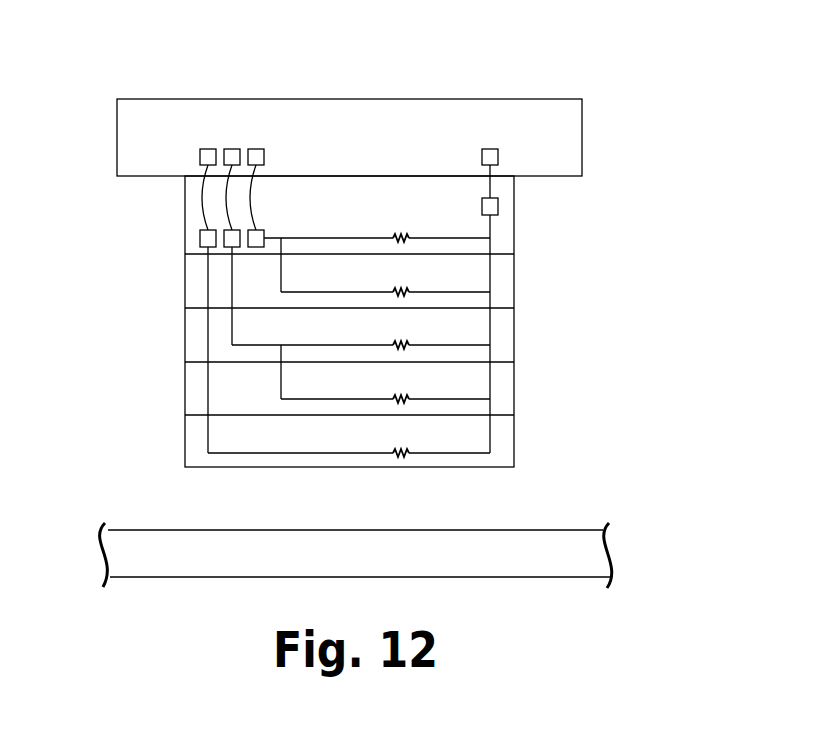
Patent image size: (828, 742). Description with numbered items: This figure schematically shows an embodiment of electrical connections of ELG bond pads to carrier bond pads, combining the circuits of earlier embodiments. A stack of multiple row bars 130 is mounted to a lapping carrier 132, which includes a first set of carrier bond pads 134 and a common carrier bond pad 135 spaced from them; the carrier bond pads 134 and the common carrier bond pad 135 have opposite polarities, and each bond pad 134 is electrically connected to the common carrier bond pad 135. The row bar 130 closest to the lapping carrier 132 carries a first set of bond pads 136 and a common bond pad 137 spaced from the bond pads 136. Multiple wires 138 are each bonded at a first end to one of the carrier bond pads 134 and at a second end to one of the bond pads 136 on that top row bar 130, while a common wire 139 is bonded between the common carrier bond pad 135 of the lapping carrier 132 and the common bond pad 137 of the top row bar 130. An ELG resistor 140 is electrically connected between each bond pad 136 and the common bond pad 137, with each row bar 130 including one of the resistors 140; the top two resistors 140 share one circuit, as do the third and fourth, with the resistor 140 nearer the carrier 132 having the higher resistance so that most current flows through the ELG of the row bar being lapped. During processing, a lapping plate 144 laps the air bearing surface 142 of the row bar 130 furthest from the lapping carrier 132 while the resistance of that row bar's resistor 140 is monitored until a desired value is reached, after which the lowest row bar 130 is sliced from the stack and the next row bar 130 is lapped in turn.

The row bar 130 is at (193, 213).
The lapping carrier 132 is at (563, 138).
The carrier bond pads 134 is at (211, 150).
The common carrier bond pad 135 is at (492, 149).
The bond pads 136 is at (200, 238).
The common bond pad 137 is at (498, 205).
The wires 138 is at (195, 195).
The common wire 139 is at (498, 174).
The ELG resistor 140 is at (428, 237).
The air bearing surface 142 is at (206, 486).
The lapping plate 144 is at (580, 553).